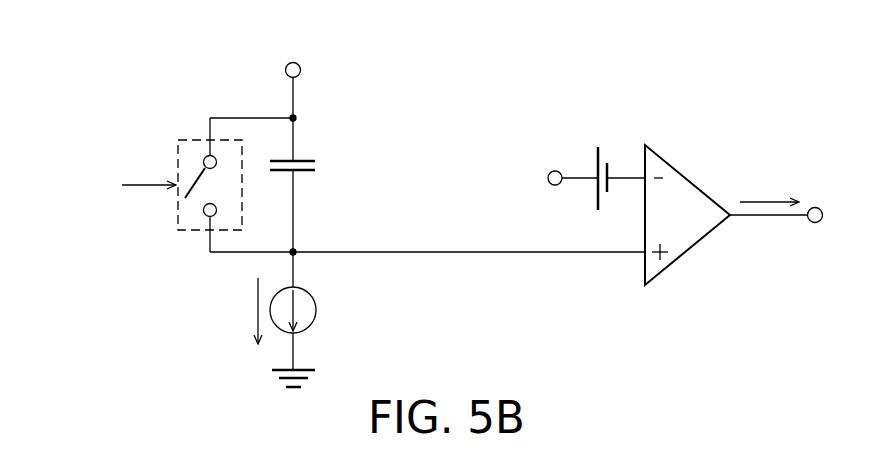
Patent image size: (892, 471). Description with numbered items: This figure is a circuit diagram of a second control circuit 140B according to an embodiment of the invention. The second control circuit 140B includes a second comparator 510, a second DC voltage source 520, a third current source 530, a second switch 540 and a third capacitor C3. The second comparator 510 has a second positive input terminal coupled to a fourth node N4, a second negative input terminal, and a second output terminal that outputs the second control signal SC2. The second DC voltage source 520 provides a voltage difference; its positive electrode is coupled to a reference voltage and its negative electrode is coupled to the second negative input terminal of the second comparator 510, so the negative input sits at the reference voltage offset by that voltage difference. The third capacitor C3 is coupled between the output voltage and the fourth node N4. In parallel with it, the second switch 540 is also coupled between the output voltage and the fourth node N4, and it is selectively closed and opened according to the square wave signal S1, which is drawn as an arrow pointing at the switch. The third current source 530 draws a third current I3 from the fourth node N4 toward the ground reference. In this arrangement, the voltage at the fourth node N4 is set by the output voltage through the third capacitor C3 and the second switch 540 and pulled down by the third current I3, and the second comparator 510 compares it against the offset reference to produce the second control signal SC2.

The second control circuit 140B is at (125, 55).
The second switch 540 is at (177, 225).
The square wave signal S1 is at (149, 183).
The third capacitor C3 is at (310, 164).
The fourth node N4 is at (294, 250).
The third current source 530 is at (316, 312).
The third current I3 is at (257, 312).
The second DC voltage source 520 is at (605, 157).
The second comparator 510 is at (645, 145).
The second control signal SC2 is at (768, 200).